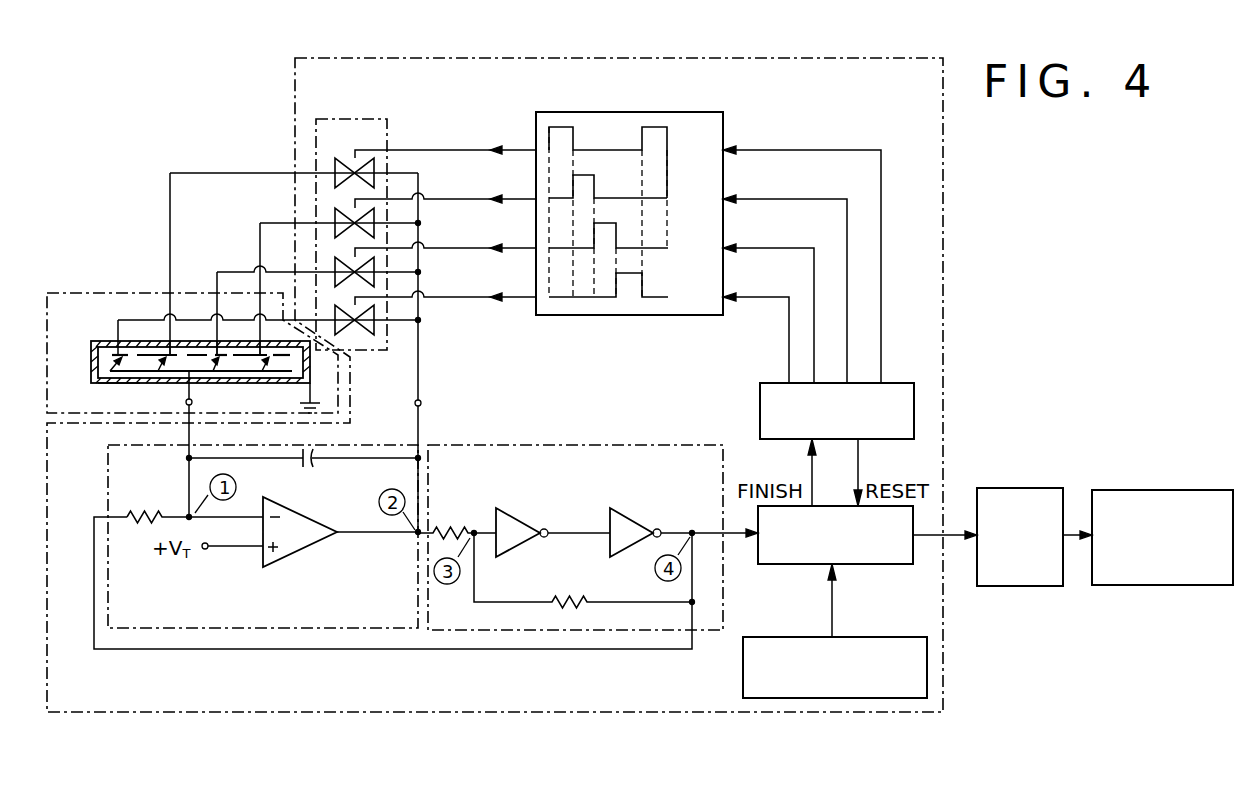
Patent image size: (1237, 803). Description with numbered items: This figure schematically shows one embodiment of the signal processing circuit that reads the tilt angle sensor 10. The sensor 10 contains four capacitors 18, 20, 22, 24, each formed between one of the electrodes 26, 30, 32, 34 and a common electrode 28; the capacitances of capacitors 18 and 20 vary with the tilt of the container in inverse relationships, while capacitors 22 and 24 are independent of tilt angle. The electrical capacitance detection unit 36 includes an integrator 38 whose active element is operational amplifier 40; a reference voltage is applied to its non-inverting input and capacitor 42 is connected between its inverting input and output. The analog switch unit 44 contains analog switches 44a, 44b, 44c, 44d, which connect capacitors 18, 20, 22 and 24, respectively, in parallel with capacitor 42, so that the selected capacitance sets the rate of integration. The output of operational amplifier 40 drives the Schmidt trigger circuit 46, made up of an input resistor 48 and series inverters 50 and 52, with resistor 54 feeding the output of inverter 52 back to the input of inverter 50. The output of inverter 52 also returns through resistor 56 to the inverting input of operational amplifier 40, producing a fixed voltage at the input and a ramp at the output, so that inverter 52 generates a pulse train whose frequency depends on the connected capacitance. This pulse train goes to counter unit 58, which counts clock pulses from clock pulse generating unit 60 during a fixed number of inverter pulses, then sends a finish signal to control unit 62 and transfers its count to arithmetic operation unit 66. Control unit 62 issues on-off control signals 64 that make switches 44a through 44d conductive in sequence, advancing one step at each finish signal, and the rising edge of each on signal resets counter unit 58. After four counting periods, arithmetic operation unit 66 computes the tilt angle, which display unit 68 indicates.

The tilt angle sensor 10 is at (63, 292).
The capacitor 18 is at (267, 374).
The capacitor 20 is at (166, 373).
The capacitor 22 is at (218, 376).
The capacitor 24 is at (112, 372).
The electrode 26 is at (243, 341).
The common electrode 28 is at (140, 384).
The electrode 30 is at (185, 341).
The electrode 32 is at (223, 341).
The electrode 34 is at (112, 343).
The electrical capacitance detection unit 36 is at (207, 712).
The integrator 38 is at (157, 650).
The operational amplifier 40 is at (315, 543).
The capacitor 42 is at (315, 462).
The analog switch unit 44 is at (387, 119).
The analog switch 44a is at (370, 170).
The analog switch 44b is at (370, 218).
The analog switch 44c is at (370, 268).
The analog switch 44d is at (370, 318).
The Schmidt trigger circuit 46 is at (455, 630).
The input resistor 48 is at (458, 528).
The inverter 50 is at (530, 520).
The inverter 52 is at (632, 513).
The resistor 54 is at (572, 595).
The resistor 56 is at (140, 523).
The counter unit 58 is at (880, 565).
The clock pulse generating unit 60 is at (810, 698).
The control unit 62 is at (867, 440).
The on-off control signals 64 is at (644, 112).
The arithmetic operation unit 66 is at (1023, 488).
The display unit 68 is at (1160, 490).